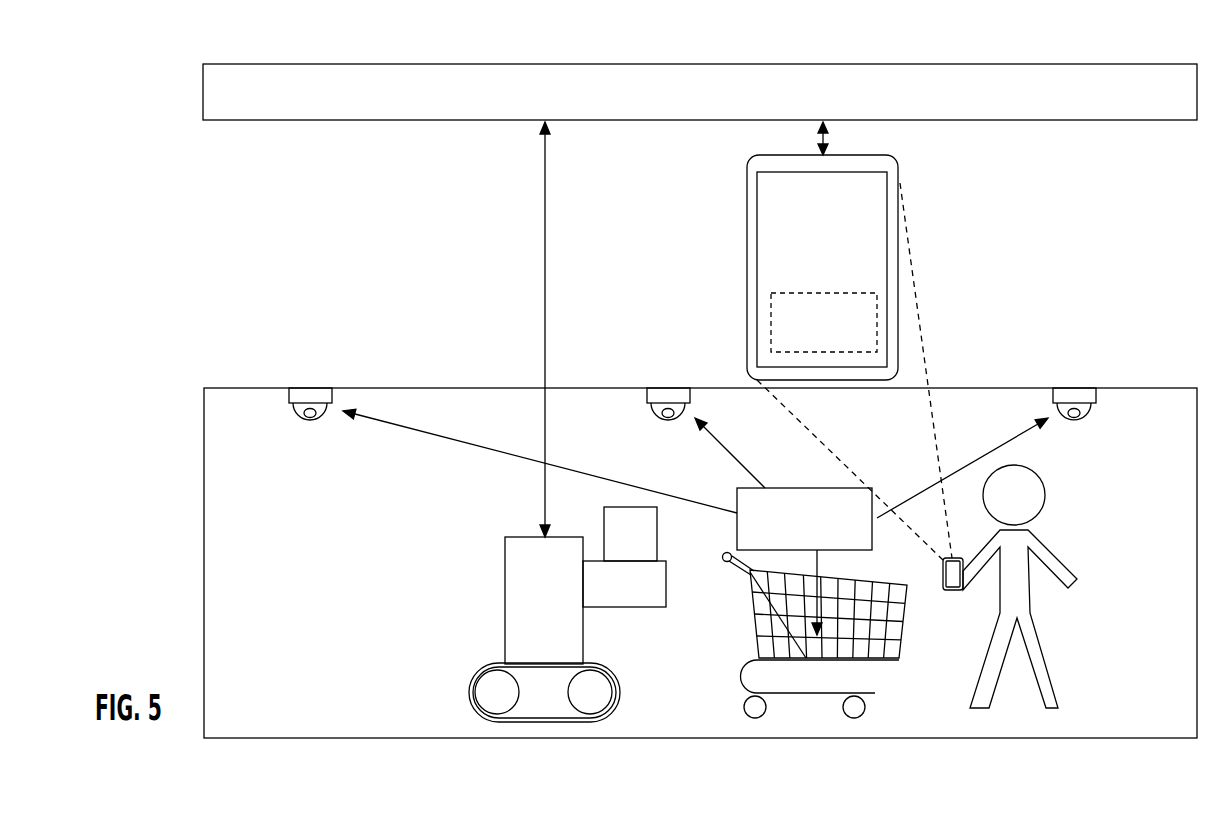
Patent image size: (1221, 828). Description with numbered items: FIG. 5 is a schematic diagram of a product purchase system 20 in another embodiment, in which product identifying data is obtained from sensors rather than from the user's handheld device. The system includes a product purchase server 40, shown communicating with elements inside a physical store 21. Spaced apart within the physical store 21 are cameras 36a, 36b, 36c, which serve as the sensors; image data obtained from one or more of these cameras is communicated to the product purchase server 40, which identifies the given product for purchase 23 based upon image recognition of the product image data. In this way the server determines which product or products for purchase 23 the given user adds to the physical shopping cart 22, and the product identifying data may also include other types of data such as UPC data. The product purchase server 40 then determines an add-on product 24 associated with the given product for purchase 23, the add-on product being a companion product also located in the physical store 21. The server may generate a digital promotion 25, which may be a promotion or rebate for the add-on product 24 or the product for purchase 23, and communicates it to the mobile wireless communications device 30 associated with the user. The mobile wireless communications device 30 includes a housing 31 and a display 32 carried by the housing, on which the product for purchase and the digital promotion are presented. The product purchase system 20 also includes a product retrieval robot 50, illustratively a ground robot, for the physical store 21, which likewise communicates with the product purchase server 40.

The product purchase system 20 is at (136, 88).
The product purchase server 40 is at (415, 51).
The physical store 21 is at (192, 427).
The camera 36a is at (310, 388).
The camera 36b is at (670, 388).
The camera 36c is at (1072, 388).
The mobile wireless communications device 30 is at (905, 146).
The housing 31 is at (747, 208).
The display 32 is at (772, 280).
The digital promotion 25 is at (878, 320).
The product for purchase 23 is at (845, 488).
The add-on product 24 is at (657, 533).
The physical shopping cart 22 is at (877, 657).
The product retrieval robot 50 is at (505, 593).